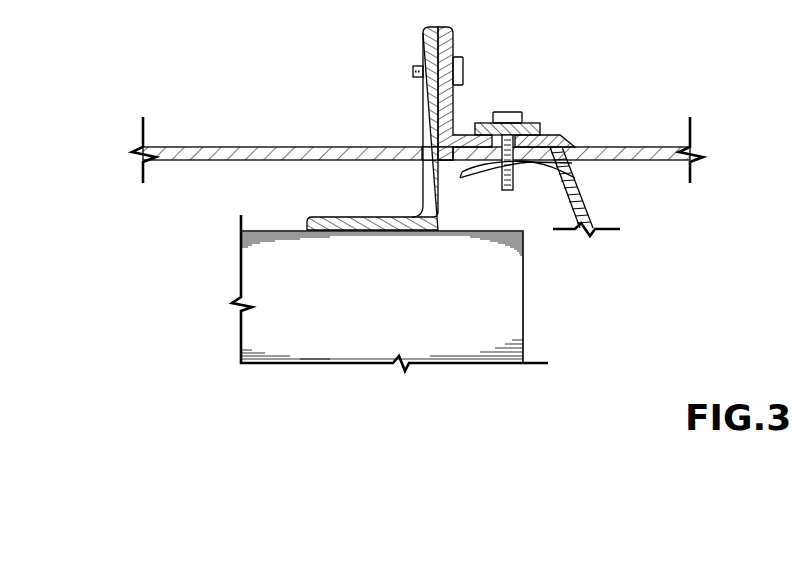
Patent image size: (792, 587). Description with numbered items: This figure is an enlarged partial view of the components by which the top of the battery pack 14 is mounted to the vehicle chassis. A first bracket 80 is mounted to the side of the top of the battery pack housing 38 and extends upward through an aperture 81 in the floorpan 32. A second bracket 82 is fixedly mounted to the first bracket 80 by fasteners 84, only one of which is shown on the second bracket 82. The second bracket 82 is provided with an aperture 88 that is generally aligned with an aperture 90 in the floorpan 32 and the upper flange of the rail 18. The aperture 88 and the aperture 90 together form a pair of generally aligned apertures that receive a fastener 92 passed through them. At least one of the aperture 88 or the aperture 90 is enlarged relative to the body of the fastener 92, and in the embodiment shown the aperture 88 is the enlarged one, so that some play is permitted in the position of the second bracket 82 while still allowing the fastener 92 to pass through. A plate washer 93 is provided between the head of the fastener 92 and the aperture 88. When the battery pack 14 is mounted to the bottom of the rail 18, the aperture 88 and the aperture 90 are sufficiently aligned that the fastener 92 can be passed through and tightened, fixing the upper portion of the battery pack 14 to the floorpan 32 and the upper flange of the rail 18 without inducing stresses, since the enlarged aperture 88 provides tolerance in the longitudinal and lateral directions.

The battery pack 14 is at (524, 348).
The rail 18 is at (592, 212).
The floorpan 32 is at (188, 147).
The battery pack housing 38 is at (524, 290).
The first bracket 80 is at (422, 50).
The aperture 81 is at (405, 138).
The second bracket 82 is at (440, 26).
The fasteners 84 is at (463, 66).
The aperture 88 is at (492, 143).
The aperture 90 is at (580, 175).
The fastener 92 is at (527, 113).
The plate washer 93 is at (541, 127).